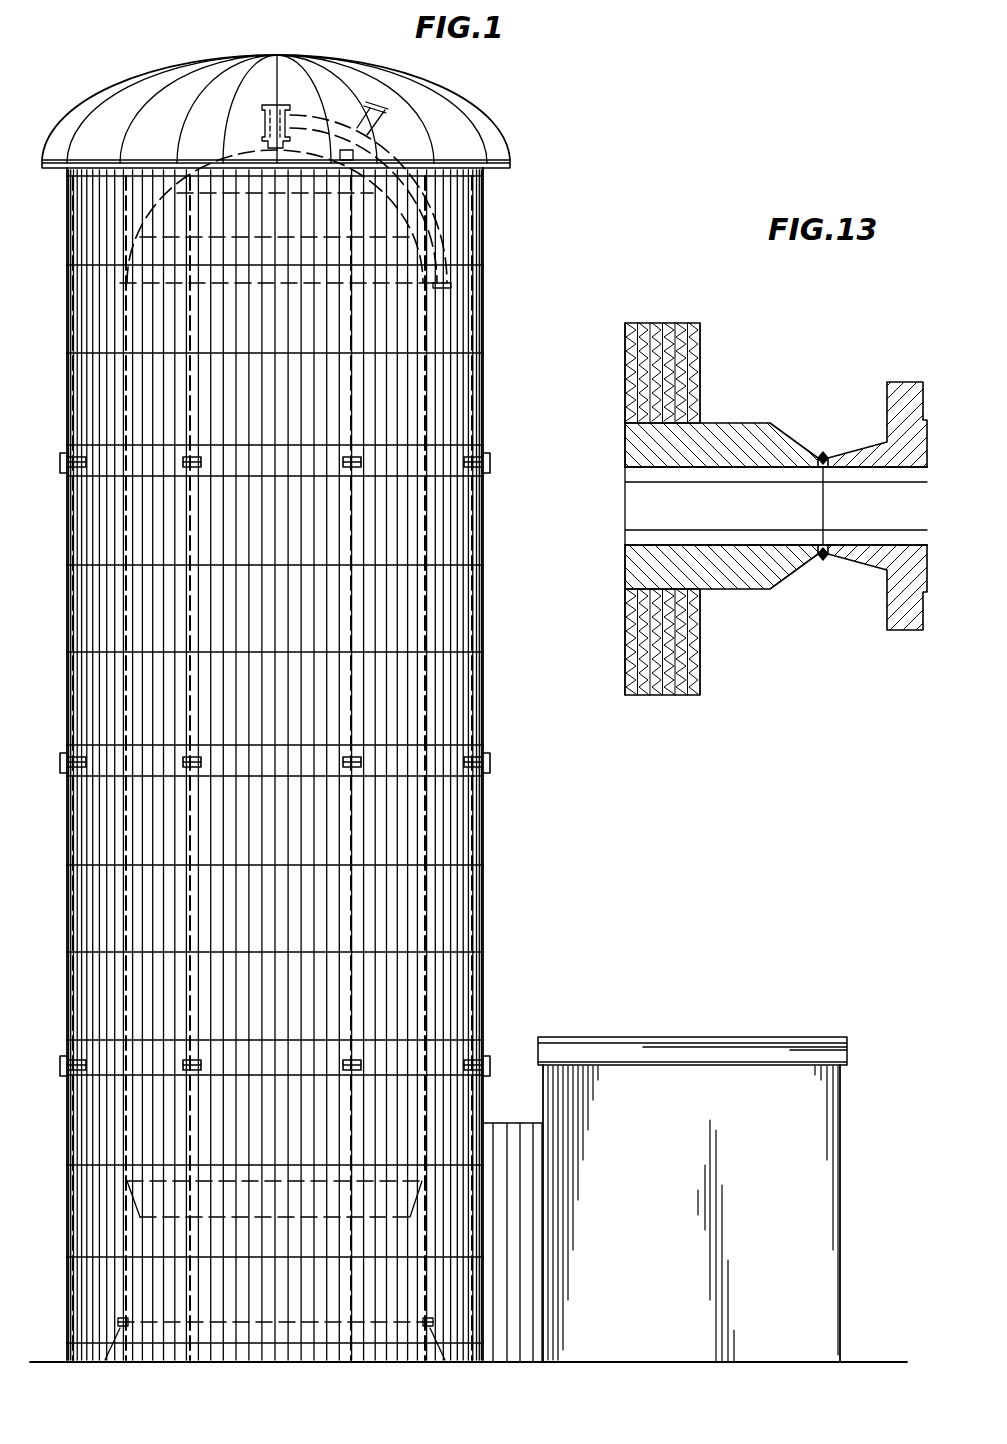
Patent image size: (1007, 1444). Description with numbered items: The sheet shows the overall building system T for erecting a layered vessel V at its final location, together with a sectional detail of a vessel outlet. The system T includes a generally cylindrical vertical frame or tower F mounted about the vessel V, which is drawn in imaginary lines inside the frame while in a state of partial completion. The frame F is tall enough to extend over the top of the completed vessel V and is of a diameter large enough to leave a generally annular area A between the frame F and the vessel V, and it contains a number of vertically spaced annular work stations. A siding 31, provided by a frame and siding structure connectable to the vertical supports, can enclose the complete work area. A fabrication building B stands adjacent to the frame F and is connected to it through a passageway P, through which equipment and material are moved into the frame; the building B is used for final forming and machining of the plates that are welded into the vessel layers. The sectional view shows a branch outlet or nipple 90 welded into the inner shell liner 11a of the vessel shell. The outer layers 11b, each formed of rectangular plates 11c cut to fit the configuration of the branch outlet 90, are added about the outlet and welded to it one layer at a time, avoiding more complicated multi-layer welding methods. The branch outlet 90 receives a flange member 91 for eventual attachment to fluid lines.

In FIG. 1, the system for the erection of a layered vessel T is at (513, 157).
In FIG. 1, the vertical frame or tower F is at (67, 283).
In FIG. 1, the layered vessel V is at (428, 319).
In FIG. 1, the siding 31 is at (452, 908).
In FIG. 1, the annular area A is at (457, 987).
In FIG. 1, the passageway P is at (513, 1133).
In FIG. 1, the fabrication building B is at (670, 1118).
In FIG. 13, the inner shell portion or liner 11a is at (625, 351).
In FIG. 13, the outer layer of shell section 11b is at (697, 660).
In FIG. 13, the rectangular plates 11c is at (657, 333).
In FIG. 13, the branch outlet or nipple 90 is at (758, 435).
In FIG. 13, the flange member 91 is at (872, 565).